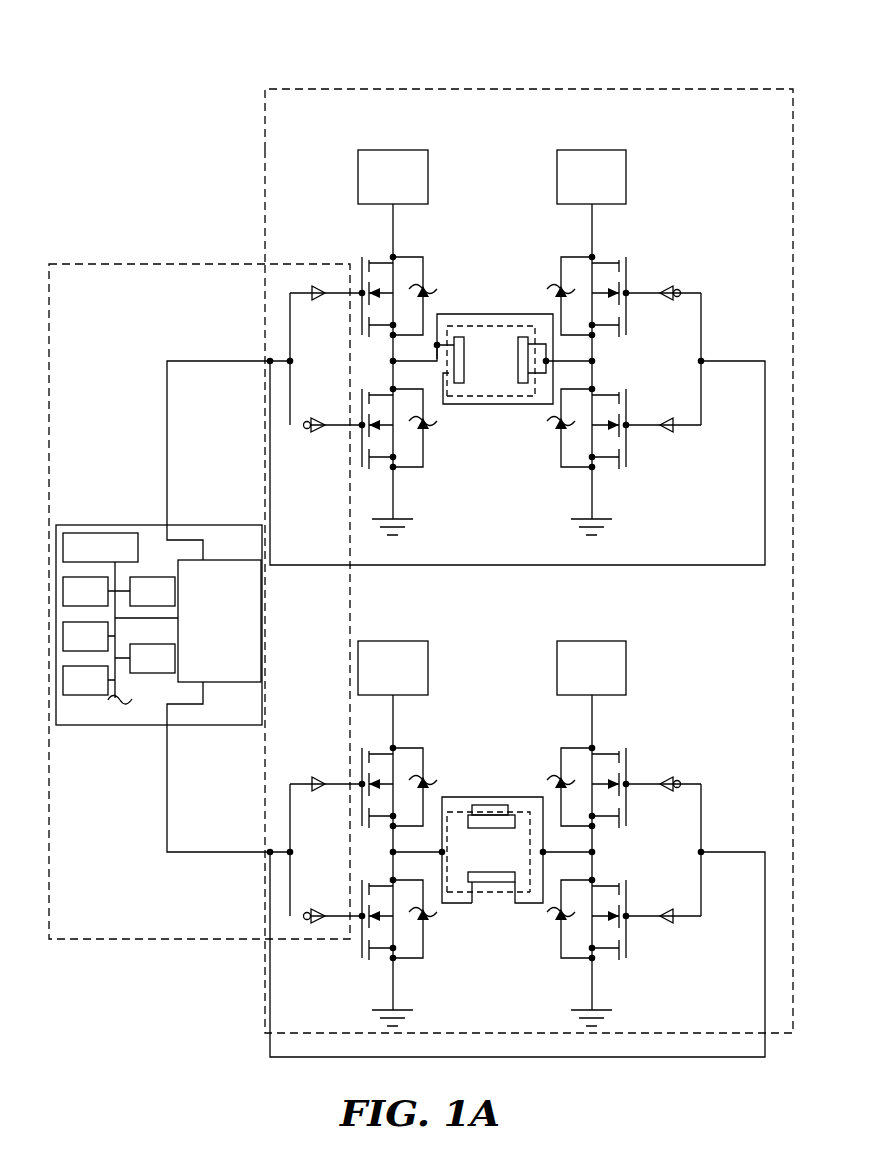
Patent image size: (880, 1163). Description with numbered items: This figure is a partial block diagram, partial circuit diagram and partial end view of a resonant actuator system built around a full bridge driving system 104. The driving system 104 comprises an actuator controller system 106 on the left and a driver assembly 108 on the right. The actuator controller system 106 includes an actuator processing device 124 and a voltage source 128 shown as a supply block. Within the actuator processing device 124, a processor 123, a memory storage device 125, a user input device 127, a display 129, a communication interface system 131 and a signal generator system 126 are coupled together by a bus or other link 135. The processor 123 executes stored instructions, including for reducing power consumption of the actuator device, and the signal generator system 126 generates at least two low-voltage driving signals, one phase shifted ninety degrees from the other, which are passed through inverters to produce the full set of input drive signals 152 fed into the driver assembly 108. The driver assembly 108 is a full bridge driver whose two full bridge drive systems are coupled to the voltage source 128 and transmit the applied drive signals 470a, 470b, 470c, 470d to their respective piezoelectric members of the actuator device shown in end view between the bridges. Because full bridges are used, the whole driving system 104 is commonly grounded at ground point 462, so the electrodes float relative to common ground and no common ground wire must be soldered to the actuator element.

The driving system 104 is at (724, 66).
The actuator controller system 106 is at (203, 263).
The driver assembly 108 is at (265, 183).
The actuator processing device 124 is at (129, 525).
The signal generator system 126 is at (219, 621).
The voltage source 128 is at (78, 532).
The processor 123 is at (85, 591).
The memory storage device 125 is at (85, 636).
The user input device 127 is at (85, 680).
The display 129 is at (152, 591).
The communication interface system 131 is at (152, 658).
The bus or other link 135 is at (122, 700).
The input drive signals 152 is at (382, 150).
The applied drive signal 470a is at (463, 326).
The applied drive signal 470b is at (492, 397).
The applied drive signal 470c is at (448, 797).
The applied drive signal 470d is at (516, 905).
The ground point 462 is at (386, 513).